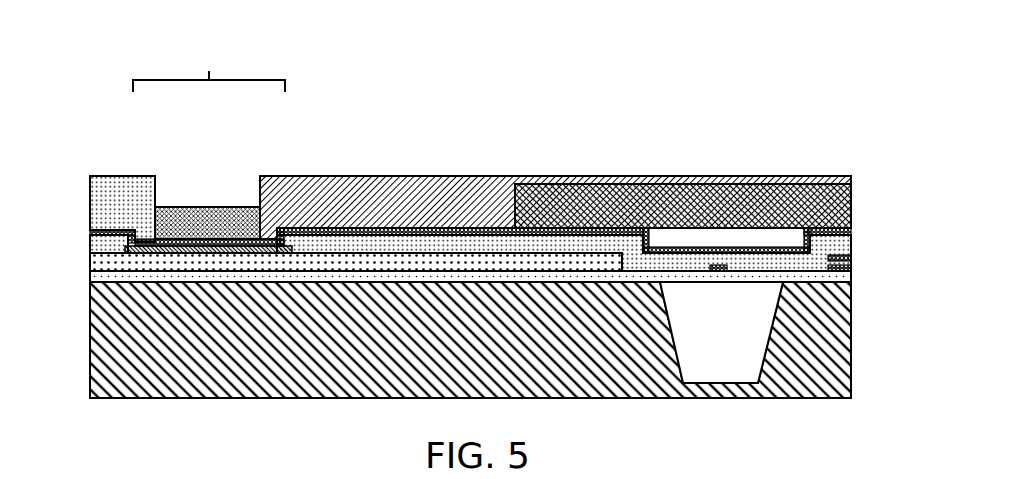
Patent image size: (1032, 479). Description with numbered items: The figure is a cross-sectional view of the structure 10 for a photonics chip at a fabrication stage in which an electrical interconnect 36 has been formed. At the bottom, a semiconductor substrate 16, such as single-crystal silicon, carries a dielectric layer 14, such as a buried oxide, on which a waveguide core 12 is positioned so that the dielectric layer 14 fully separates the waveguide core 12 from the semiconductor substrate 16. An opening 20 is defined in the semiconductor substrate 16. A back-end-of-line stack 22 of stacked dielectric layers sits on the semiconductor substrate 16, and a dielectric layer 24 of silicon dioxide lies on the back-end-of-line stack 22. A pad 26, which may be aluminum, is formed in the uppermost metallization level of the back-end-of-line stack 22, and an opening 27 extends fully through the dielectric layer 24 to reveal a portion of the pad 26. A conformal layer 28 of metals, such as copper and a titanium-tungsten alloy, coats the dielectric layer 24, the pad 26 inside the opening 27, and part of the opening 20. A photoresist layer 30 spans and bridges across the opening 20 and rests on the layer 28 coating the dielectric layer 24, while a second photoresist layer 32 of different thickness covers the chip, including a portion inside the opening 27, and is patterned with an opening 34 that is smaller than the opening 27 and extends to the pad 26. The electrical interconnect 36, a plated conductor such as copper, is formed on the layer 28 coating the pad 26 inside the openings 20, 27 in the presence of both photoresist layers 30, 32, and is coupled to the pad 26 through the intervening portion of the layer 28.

The structure 10 is at (113, 50).
The waveguide core 12 is at (725, 268).
The dielectric layer 14 is at (800, 278).
The semiconductor substrate 16 is at (802, 348).
The opening 20 is at (740, 345).
The back-end-of-line stack 22 is at (138, 267).
The dielectric layer 24 is at (458, 243).
The pad 26 is at (148, 242).
The opening 27 is at (209, 65).
The layer 28 is at (395, 232).
The photoresist layer 30 is at (668, 195).
The photoresist layer 32 is at (308, 205).
The opening 34 is at (229, 198).
The electrical interconnect 36 is at (197, 222).